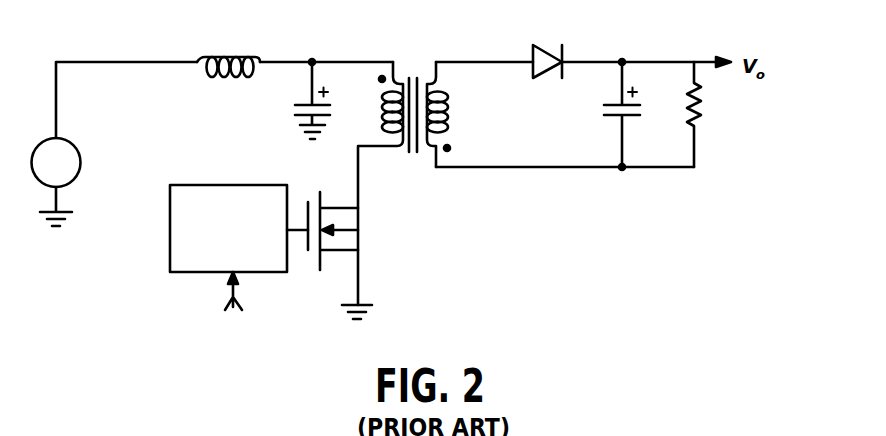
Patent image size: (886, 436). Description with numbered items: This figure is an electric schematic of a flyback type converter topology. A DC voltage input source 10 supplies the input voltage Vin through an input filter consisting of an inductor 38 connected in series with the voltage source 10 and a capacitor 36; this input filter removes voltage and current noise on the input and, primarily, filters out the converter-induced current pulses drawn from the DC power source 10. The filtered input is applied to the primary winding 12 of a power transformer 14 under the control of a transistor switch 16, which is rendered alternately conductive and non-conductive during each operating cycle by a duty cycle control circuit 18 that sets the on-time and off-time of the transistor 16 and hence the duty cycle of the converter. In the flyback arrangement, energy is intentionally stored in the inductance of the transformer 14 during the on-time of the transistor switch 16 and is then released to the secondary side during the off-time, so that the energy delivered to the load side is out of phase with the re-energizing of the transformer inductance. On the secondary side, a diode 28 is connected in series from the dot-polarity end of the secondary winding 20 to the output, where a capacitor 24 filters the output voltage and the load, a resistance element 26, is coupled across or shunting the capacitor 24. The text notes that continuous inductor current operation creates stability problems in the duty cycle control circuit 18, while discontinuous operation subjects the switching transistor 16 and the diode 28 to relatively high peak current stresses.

The DC voltage input source 10 is at (80, 152).
The inductor 38 is at (240, 55).
The capacitor 36 is at (295, 106).
The power transformer 14 is at (410, 62).
The primary winding 12 is at (382, 108).
The secondary winding 20 is at (448, 113).
The diode 28 is at (550, 45).
The capacitor 24 is at (602, 108).
The resistance element 26 is at (700, 112).
The duty cycle control circuit 18 is at (168, 230).
The transistor switch 16 is at (360, 222).